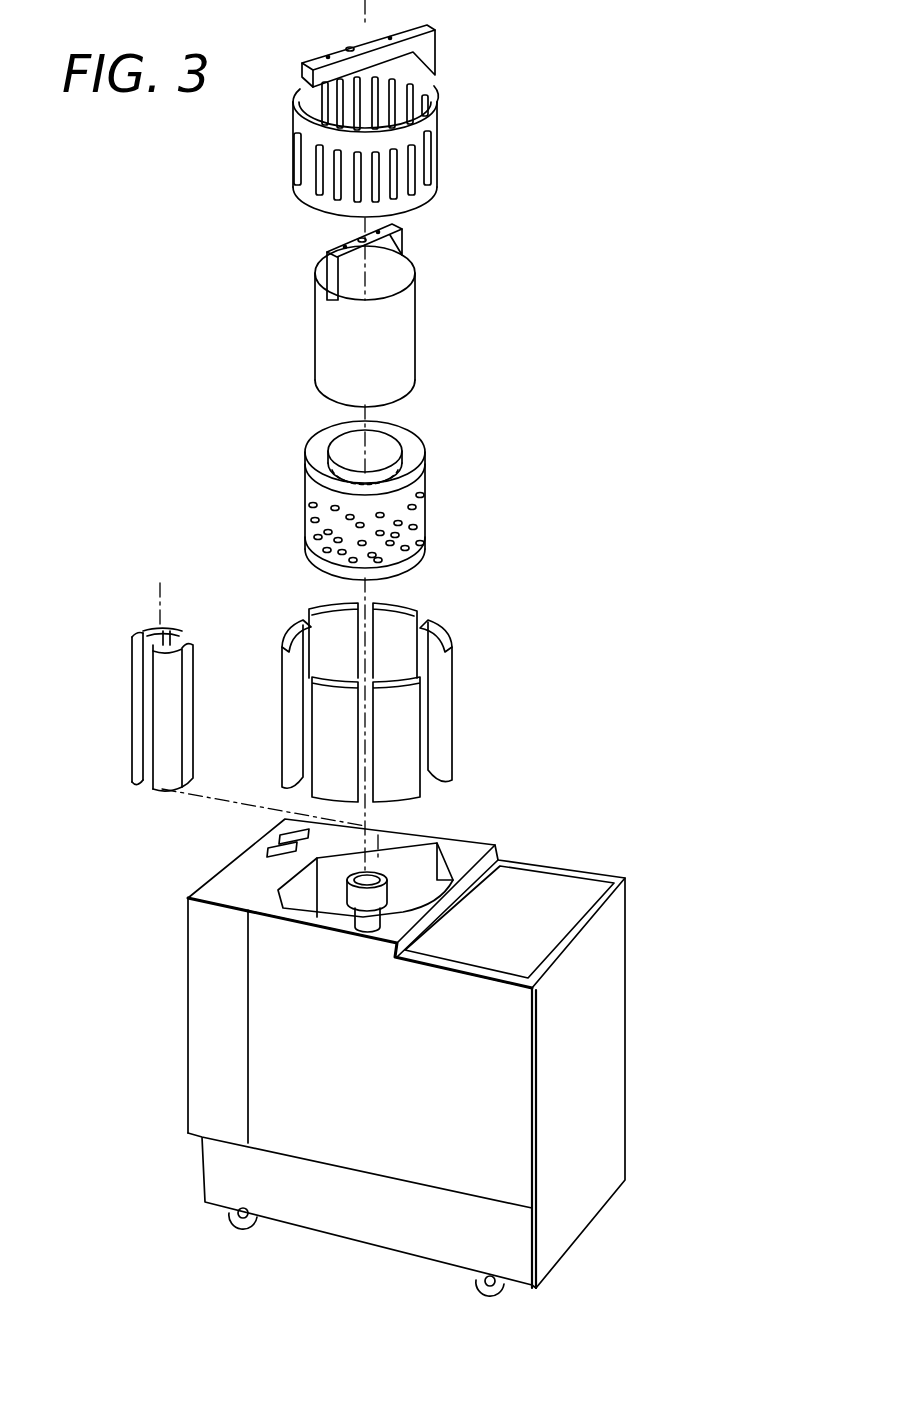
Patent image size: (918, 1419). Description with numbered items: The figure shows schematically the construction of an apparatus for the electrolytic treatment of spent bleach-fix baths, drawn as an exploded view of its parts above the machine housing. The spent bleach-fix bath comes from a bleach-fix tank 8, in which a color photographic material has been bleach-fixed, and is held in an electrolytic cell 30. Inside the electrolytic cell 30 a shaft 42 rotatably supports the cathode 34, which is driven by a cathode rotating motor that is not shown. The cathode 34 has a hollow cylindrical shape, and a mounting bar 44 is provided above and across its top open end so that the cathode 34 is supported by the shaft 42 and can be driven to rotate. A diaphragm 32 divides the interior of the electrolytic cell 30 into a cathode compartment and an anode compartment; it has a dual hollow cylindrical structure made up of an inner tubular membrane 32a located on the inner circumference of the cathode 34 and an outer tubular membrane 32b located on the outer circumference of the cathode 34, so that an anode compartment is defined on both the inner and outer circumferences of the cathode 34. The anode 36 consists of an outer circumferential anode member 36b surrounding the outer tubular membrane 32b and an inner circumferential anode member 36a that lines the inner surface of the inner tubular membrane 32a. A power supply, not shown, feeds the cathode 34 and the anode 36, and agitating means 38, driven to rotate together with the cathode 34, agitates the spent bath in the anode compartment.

The bleach-fix tank 8 is at (409, 1035).
The electrolytic cell 30 is at (413, 852).
The diaphragm 32 is at (441, 472).
The inner tubular membrane 32a is at (395, 440).
The outer tubular membrane 32b is at (412, 500).
The cathode 34 is at (408, 308).
The anode 36 is at (292, 665).
The inner circumferential anode member 36a is at (190, 631).
The outer circumferential anode member 36b is at (356, 688).
The agitating means 38 is at (437, 122).
The shaft 42 is at (452, 882).
The mounting bar 44 is at (399, 226).